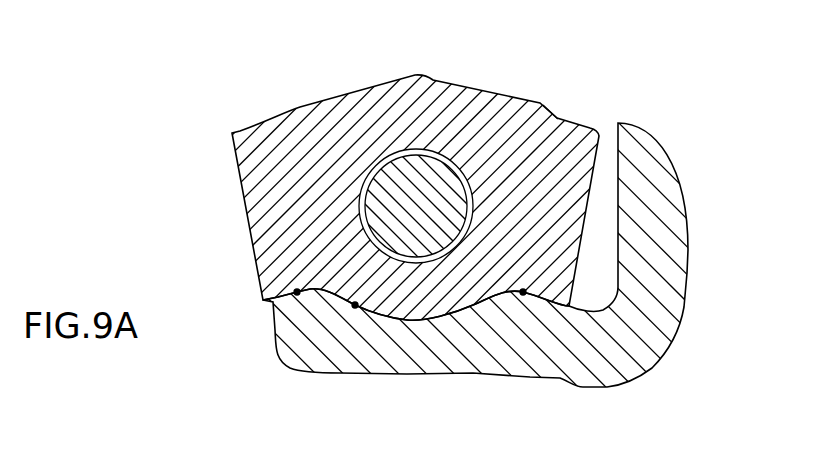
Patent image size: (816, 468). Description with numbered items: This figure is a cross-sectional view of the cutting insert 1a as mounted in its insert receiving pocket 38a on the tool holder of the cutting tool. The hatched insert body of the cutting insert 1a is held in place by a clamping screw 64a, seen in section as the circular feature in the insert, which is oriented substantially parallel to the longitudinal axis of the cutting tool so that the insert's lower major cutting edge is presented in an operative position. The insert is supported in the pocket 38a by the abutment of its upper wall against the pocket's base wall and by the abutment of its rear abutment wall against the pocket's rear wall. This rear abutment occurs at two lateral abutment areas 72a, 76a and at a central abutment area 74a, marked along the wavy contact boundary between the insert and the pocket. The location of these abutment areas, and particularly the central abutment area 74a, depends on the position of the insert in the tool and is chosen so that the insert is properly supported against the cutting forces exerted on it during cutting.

The cutting insert 1a is at (192, 53).
The clamping screw 64a is at (420, 192).
The insert receiving pocket 38a is at (598, 192).
The lateral abutment area 72a is at (297, 295).
The central abutment area 74a is at (355, 307).
The lateral abutment area 76a is at (525, 294).